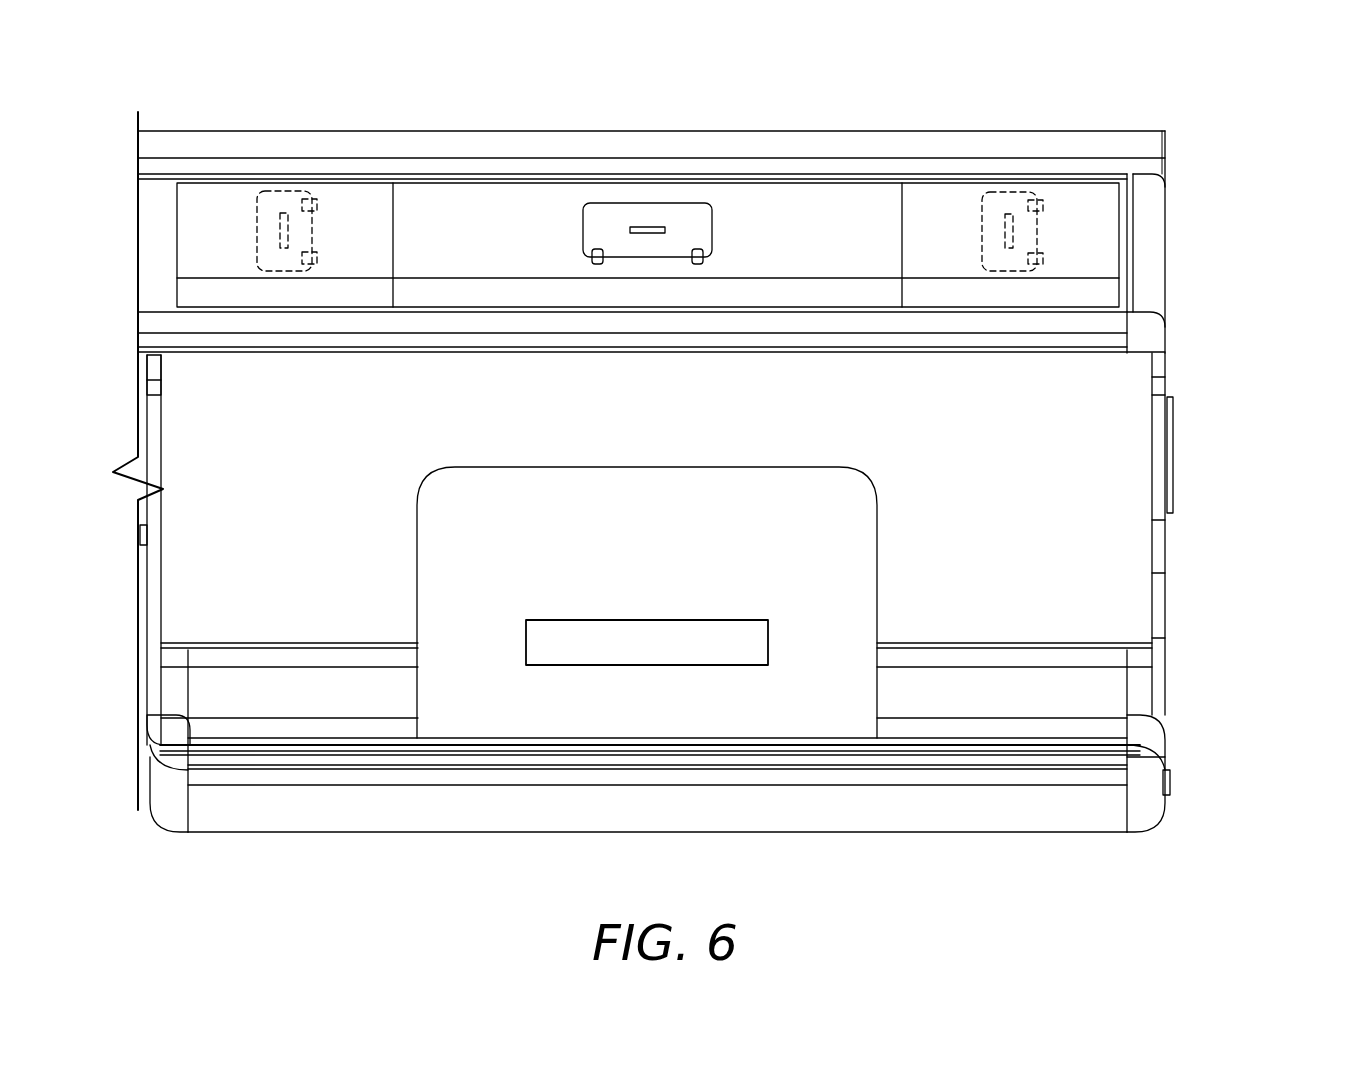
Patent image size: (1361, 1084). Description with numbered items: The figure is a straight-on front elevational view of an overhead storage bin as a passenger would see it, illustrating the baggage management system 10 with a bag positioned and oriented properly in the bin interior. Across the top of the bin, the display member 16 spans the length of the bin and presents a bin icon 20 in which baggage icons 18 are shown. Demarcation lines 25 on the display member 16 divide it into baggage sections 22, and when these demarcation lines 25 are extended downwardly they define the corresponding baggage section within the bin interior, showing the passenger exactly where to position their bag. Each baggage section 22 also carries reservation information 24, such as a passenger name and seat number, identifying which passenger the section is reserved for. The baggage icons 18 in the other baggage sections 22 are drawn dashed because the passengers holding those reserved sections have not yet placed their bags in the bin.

The baggage management system 10 is at (1190, 139).
The display member 16 is at (1160, 176).
The baggage icon 18 is at (647, 210).
The bin icon 20 is at (1120, 200).
The baggage section 22 is at (482, 197).
The reservation information 24 is at (1112, 290).
The demarcation line 25 is at (177, 245).